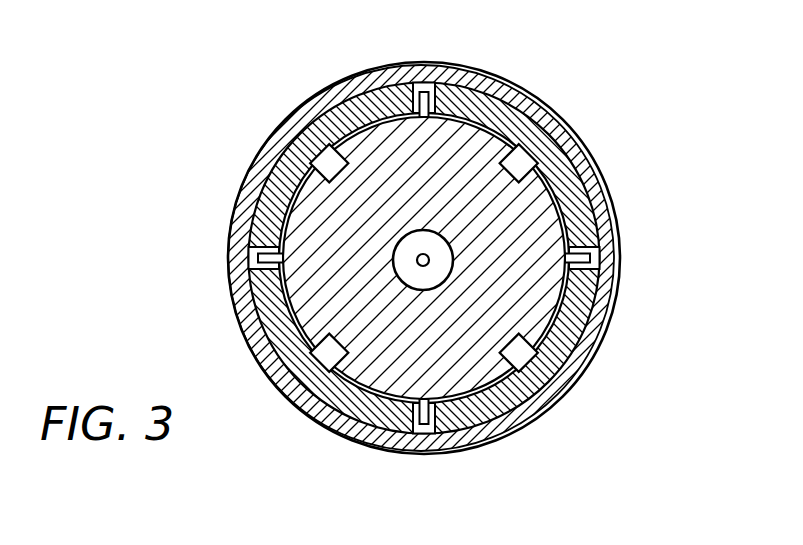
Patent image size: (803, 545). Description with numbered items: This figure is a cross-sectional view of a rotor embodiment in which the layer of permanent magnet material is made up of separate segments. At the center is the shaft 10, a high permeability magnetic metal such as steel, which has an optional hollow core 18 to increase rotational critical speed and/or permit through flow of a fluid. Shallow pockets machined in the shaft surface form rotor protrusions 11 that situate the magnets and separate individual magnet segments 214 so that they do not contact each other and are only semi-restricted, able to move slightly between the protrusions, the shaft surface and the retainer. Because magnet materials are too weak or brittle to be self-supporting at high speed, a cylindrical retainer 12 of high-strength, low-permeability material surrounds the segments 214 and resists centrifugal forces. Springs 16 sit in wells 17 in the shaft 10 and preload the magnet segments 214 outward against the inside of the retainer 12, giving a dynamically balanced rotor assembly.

The shaft 10 is at (515, 319).
The rotor protrusions 11 is at (441, 82).
The retainer 12 is at (518, 82).
The segments of permanent magnet material 214 is at (544, 104).
The springs 16 is at (556, 148).
The wells 17 is at (604, 190).
The hollow core 18 is at (434, 250).